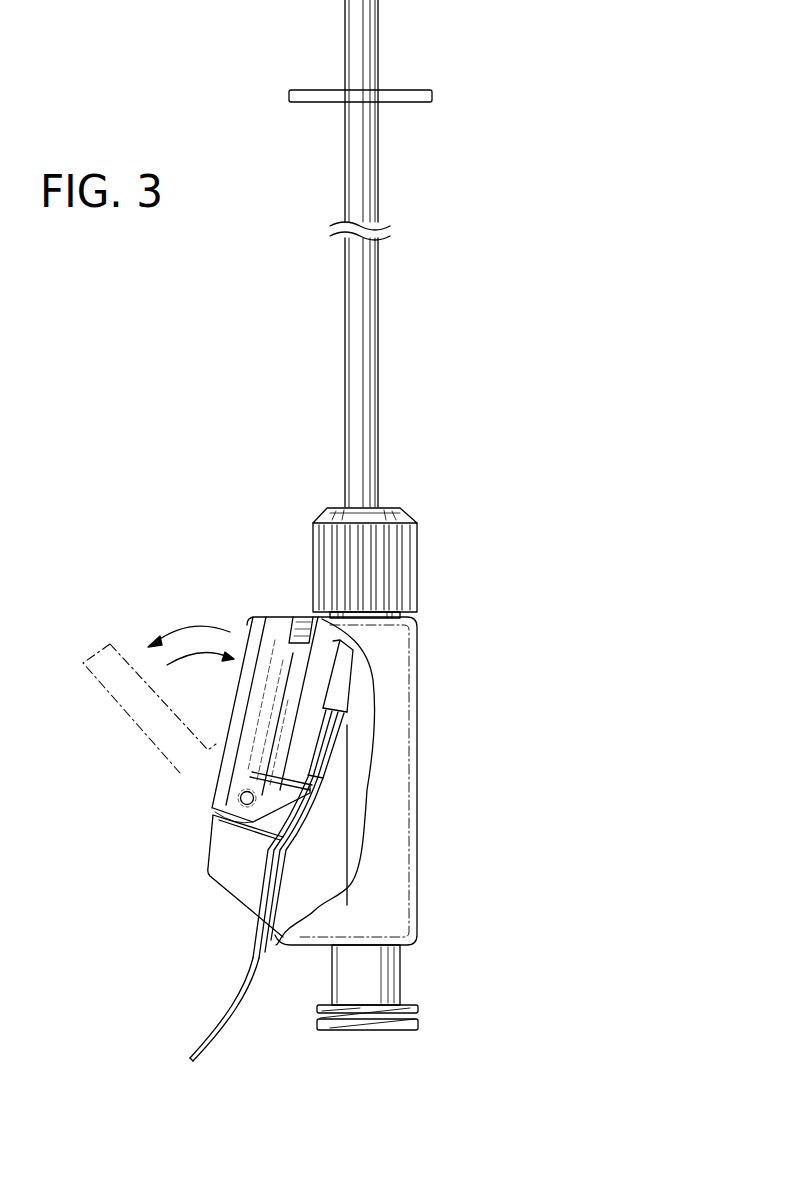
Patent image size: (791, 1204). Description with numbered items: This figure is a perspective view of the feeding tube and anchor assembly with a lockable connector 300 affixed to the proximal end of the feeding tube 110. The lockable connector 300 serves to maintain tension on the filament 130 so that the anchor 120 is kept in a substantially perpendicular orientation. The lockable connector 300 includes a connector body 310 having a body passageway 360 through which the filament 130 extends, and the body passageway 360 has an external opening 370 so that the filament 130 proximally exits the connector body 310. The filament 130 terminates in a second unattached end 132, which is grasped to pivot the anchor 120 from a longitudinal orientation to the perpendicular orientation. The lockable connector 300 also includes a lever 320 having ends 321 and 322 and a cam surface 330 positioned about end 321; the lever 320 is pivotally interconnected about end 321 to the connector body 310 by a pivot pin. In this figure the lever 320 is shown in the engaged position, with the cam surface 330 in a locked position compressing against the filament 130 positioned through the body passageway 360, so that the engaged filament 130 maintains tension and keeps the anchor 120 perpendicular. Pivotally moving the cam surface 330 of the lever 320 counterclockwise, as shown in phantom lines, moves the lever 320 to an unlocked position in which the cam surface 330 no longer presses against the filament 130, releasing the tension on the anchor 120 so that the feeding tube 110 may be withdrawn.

The feeding tube 110 is at (378, 300).
The anchor 120 is at (308, 90).
The filament 130 is at (203, 1035).
The second unattached end 132 is at (227, 1042).
The lockable connector 300 is at (157, 889).
The connector body 310 is at (207, 875).
The lever 320 is at (235, 732).
The end 321 is at (262, 822).
The end 322 is at (262, 615).
The cam surface 330 is at (293, 795).
The body passageway 360 is at (343, 710).
The external opening 370 is at (277, 948).